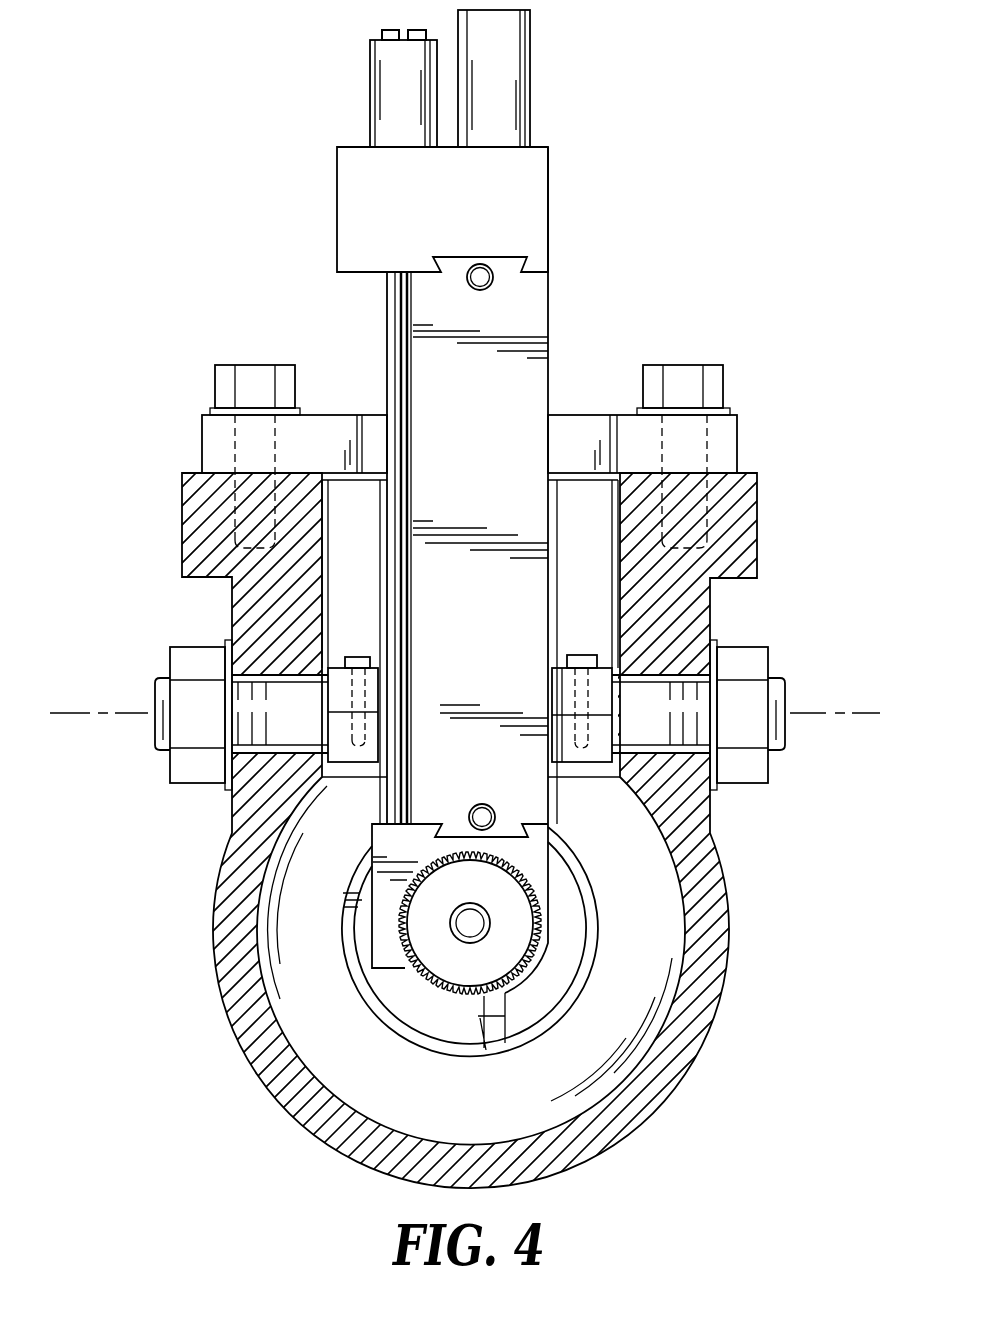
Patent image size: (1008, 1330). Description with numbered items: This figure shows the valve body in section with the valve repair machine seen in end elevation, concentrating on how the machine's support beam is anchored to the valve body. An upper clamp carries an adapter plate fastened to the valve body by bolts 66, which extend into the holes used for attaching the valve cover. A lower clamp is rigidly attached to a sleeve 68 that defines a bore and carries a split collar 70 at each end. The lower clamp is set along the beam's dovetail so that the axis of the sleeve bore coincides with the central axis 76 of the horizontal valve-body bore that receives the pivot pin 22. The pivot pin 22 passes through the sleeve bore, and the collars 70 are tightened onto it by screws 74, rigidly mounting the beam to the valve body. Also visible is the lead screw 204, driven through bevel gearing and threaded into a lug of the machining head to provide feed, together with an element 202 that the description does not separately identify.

The pivot pin 22 is at (155, 737).
The bolts 66 is at (245, 365).
The sleeve 68 is at (553, 662).
The split collar 70 is at (357, 765).
The screws 74 is at (355, 657).
The central axis 76 is at (862, 715).
The upper pin hole 202 is at (487, 285).
The lead screw 204 is at (483, 806).